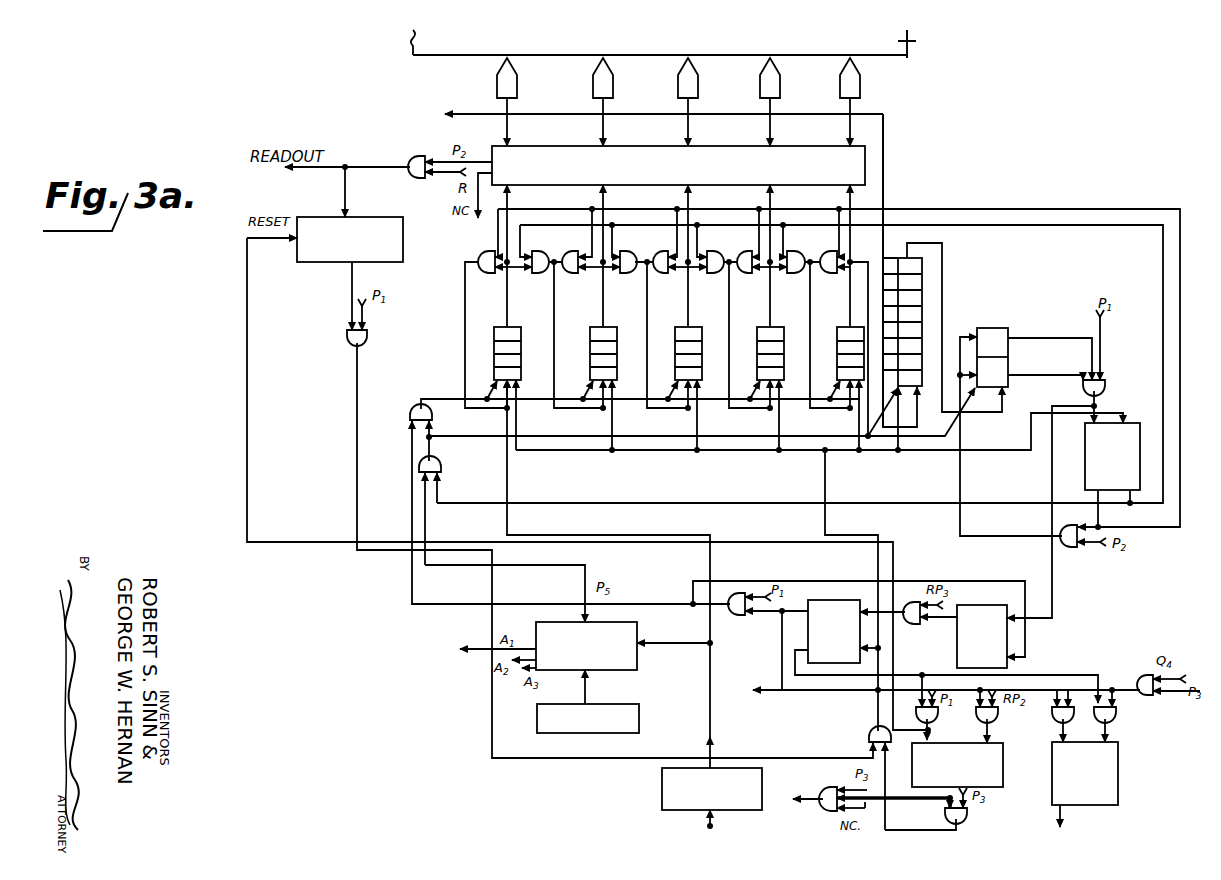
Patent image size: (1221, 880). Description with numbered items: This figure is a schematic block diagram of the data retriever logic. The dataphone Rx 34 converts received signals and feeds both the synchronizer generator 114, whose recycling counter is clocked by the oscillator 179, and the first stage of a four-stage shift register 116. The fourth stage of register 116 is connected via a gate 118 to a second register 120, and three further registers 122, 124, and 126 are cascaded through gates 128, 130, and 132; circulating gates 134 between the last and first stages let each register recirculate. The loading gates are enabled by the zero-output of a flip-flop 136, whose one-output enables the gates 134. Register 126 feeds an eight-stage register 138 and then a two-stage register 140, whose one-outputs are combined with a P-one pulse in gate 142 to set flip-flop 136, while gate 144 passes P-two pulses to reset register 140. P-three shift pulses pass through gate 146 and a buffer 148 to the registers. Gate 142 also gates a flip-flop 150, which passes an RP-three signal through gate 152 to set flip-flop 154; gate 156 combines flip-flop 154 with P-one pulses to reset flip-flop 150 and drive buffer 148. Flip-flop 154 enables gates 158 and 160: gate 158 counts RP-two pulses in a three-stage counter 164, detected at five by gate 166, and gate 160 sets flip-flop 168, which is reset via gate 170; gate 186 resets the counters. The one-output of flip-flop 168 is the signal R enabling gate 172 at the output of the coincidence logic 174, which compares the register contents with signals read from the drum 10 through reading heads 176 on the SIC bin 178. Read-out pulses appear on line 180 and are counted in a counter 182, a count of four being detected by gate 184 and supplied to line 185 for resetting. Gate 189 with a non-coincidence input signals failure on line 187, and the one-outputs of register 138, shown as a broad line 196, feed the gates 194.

The data storage drum 10 is at (923, 42).
The bin 178 is at (515, 46).
The reading heads 176 is at (858, 92).
The coincidence logic 174 is at (492, 149).
The gate 172 is at (417, 156).
The line 180 is at (392, 164).
The broad line 196 is at (886, 164).
The 3-stage binary counter 182 is at (403, 242).
The gate 184 is at (368, 337).
The circulating gates 134 is at (486, 275).
The gate 118 is at (540, 275).
The gate 128 is at (628, 275).
The gate 130 is at (715, 275).
The gate 132 is at (797, 275).
The gates 194 is at (834, 275).
The 4-stage shift register 116 is at (494, 350).
The second 4-stage register 120 is at (590, 328).
The shift register 122 is at (676, 328).
The shift register 124 is at (759, 328).
The shift register 126 is at (840, 328).
The 8-stage shift register 138 is at (923, 282).
The 2-stage register 140 is at (1004, 322).
The gate 142 is at (1110, 388).
The flip-flop 136 is at (1132, 423).
The gate 144 is at (1070, 548).
The buffer 148 is at (407, 414).
The gate 146 is at (441, 467).
The synchronizer generator 114 is at (637, 632).
The oscillator 179 is at (640, 726).
The dataphone Rx 34 is at (662, 788).
The gate 156 is at (742, 616).
The flip-flop 154 is at (842, 598).
The gate 152 is at (914, 625).
The flip-flop 150 is at (1000, 598).
The line 185 is at (872, 730).
The gate 186 is at (916, 712).
The gate 158 is at (998, 715).
The gate 160 is at (1054, 722).
The gate 170 is at (1116, 714).
The 3-stage binary counter 164 is at (1003, 778).
The flip-flop 168 is at (1118, 755).
The gate 166 is at (967, 815).
The gate 189 is at (836, 785).
The line 187 is at (822, 812).